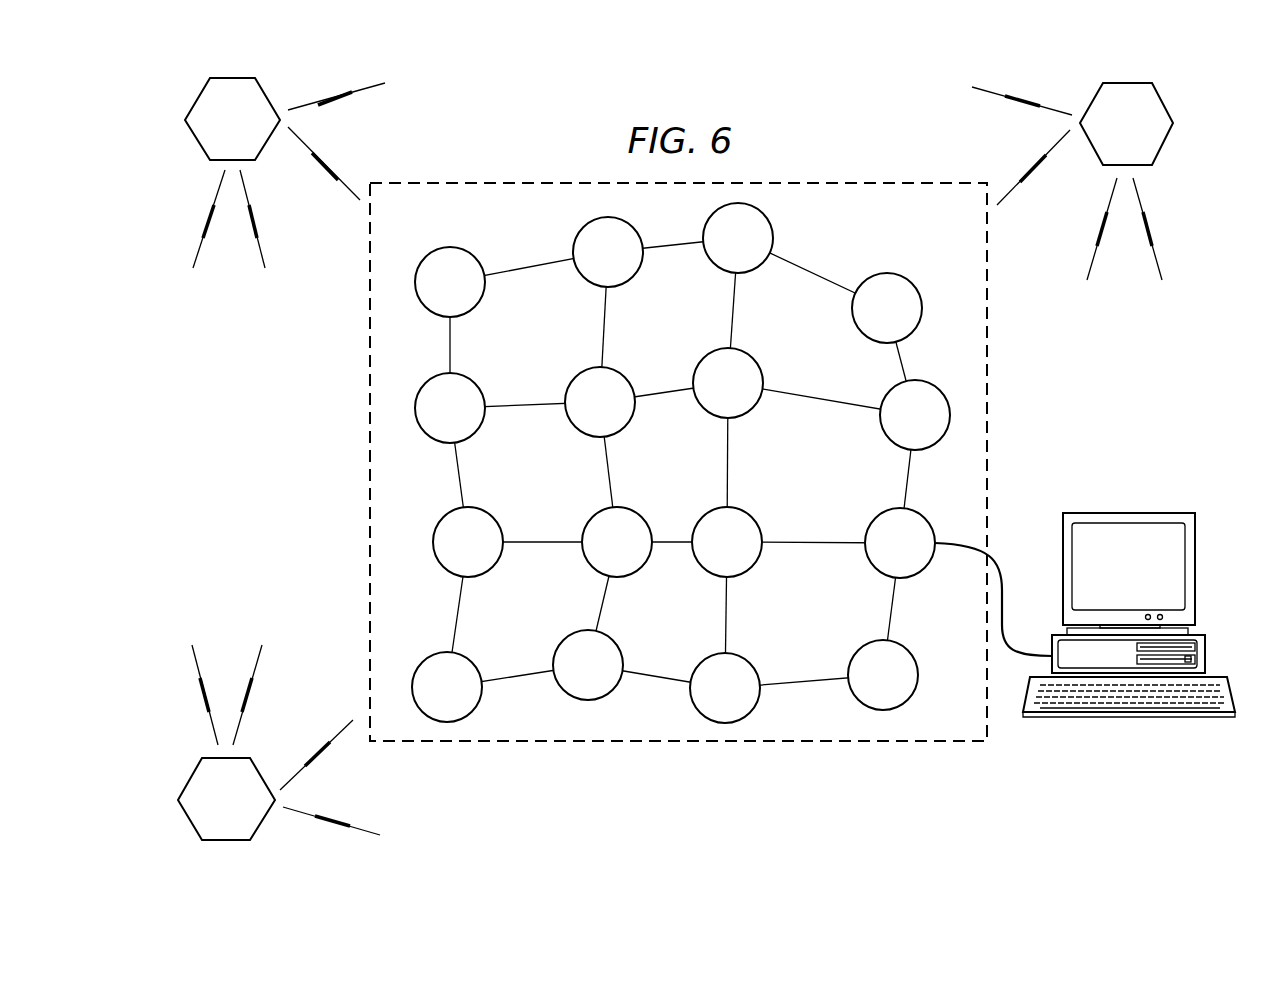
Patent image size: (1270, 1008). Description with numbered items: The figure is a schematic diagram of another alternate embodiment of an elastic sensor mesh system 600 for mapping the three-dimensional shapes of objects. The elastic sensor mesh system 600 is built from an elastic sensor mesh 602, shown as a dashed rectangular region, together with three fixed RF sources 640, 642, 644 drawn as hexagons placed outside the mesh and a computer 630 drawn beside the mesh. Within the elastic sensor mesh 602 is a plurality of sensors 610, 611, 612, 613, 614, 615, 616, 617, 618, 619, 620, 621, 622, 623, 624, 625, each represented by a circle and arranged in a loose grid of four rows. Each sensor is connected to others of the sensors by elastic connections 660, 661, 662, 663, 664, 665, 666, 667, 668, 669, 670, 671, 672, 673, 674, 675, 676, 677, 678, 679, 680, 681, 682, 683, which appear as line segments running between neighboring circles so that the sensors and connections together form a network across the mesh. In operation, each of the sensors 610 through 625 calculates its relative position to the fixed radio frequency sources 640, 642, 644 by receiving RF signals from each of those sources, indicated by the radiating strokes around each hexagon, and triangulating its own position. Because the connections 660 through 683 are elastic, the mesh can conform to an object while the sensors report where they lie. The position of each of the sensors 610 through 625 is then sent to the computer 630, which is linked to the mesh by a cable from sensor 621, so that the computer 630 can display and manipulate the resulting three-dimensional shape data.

The elastic sensor mesh system 600 is at (1005, 810).
The elastic sensor mesh 602 is at (988, 440).
The sensor 610 is at (431, 295).
The sensor 611 is at (589, 265).
The sensor 612 is at (719, 251).
The sensor 613 is at (868, 321).
The sensor 614 is at (431, 421).
The sensor 615 is at (581, 415).
The sensor 616 is at (709, 396).
The sensor 617 is at (896, 428).
The sensor 618 is at (449, 555).
The sensor 619 is at (598, 555).
The sensor 620 is at (708, 555).
The sensor 621 is at (881, 556).
The sensor 622 is at (428, 700).
The sensor 623 is at (569, 678).
The sensor 624 is at (706, 701).
The sensor 625 is at (864, 688).
The computer 630 is at (1196, 565).
The fixed RF source 640 is at (1107, 135).
The fixed RF source 642 is at (213, 131).
The fixed RF source 644 is at (208, 811).
The elastic connection 660 is at (530, 262).
The elastic connection 661 is at (670, 238).
The elastic connection 662 is at (817, 269).
The elastic connection 663 is at (449, 346).
The elastic connection 664 is at (603, 310).
The elastic connection 665 is at (733, 292).
The elastic connection 666 is at (905, 362).
The elastic connection 667 is at (524, 400).
The elastic connection 668 is at (663, 388).
The elastic connection 669 is at (820, 395).
The elastic connection 670 is at (456, 477).
The elastic connection 671 is at (603, 455).
The elastic connection 672 is at (727, 465).
The elastic connection 673 is at (908, 480).
The elastic connection 674 is at (542, 539).
The elastic connection 675 is at (669, 539).
The elastic connection 676 is at (818, 541).
The elastic connection 677 is at (456, 615).
The elastic connection 678 is at (603, 600).
The elastic connection 679 is at (727, 617).
The elastic connection 680 is at (895, 610).
The elastic connection 681 is at (519, 679).
The elastic connection 682 is at (652, 682).
The elastic connection 683 is at (806, 688).